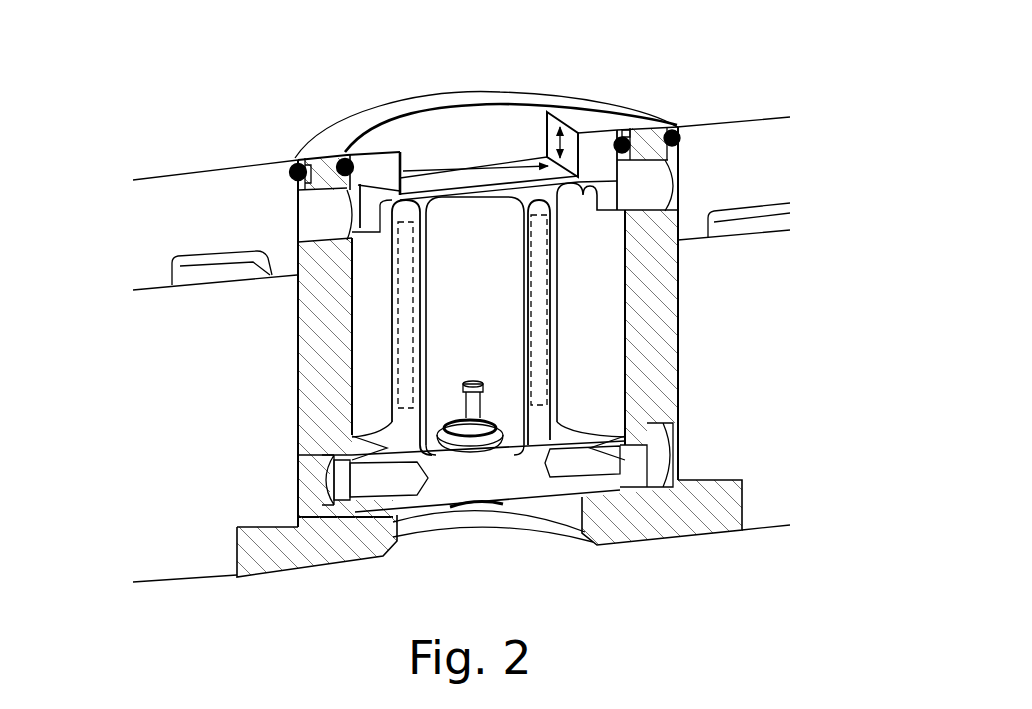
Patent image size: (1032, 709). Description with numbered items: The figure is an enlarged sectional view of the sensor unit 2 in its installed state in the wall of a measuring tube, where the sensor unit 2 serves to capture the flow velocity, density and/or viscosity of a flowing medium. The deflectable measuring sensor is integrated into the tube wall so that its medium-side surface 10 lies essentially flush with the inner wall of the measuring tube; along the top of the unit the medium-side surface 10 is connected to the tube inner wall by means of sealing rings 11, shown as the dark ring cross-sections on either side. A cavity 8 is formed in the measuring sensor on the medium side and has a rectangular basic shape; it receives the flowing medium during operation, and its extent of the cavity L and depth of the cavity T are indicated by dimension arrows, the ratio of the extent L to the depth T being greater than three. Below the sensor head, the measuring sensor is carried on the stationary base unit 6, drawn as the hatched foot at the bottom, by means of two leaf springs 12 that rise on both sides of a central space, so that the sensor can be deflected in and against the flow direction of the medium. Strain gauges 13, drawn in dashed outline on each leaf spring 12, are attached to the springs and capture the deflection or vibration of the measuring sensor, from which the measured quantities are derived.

The sensor unit 2 is at (636, 61).
The stationary base unit 6 is at (513, 483).
The cavity 8 is at (477, 137).
The medium-side surface 10 is at (340, 160).
The sealing rings 11 is at (308, 172).
The leaf springs 12 is at (400, 302).
The strain gauges 13 is at (403, 372).
The extent of the cavity L is at (437, 150).
The depth of the cavity T is at (556, 127).